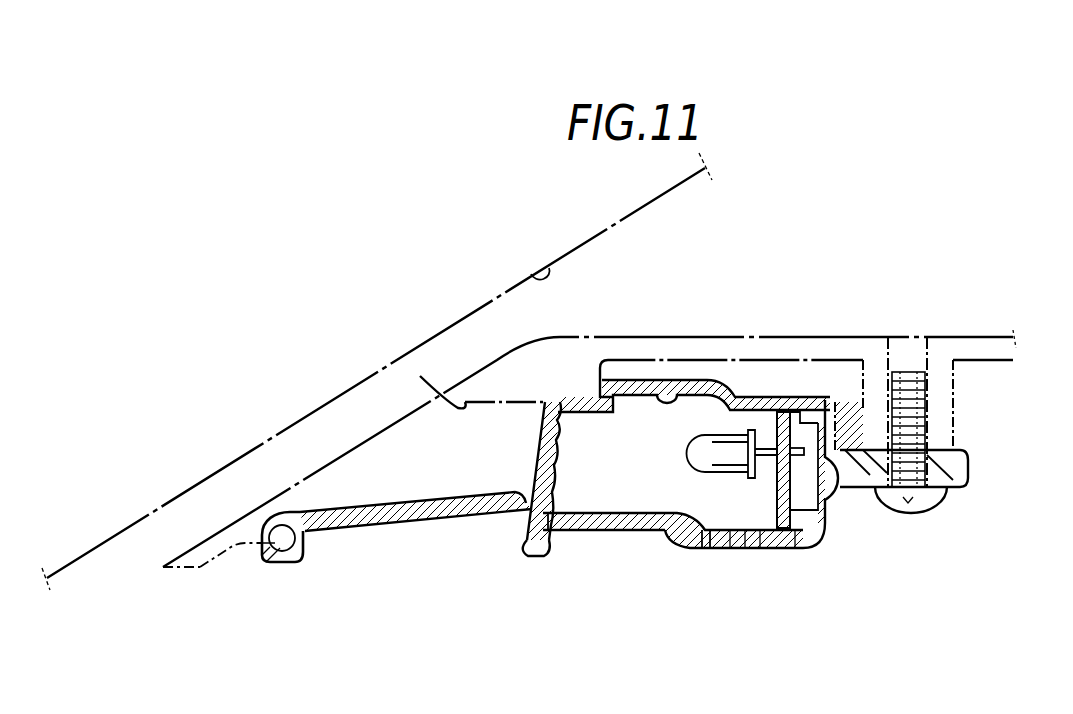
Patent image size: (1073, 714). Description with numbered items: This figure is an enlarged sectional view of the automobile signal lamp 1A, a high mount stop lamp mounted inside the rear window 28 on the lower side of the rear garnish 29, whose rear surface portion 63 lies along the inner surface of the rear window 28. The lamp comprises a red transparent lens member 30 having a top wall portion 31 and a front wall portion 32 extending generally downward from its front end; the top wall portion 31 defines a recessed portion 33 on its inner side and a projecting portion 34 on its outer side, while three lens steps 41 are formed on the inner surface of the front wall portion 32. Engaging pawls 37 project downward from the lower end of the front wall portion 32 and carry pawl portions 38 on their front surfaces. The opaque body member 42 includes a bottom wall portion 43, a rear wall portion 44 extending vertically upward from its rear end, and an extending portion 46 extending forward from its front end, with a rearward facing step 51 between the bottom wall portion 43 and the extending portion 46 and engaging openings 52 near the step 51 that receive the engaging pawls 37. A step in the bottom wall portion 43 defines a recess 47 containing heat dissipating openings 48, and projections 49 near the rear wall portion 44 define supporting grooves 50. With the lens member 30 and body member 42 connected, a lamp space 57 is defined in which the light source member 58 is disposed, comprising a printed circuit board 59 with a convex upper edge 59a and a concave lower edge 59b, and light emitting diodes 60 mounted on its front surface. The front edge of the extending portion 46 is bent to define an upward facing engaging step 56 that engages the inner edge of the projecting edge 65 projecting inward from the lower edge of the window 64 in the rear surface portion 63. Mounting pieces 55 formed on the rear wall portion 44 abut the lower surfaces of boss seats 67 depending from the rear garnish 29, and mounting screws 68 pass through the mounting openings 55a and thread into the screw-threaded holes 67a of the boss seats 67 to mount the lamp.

The automobile signal lamp 1A is at (402, 264).
The rear window 28 is at (546, 265).
The rear garnish 29 is at (820, 337).
The lens member 30 is at (530, 448).
The top wall portion 31 is at (735, 395).
The front wall portion 32 is at (542, 427).
The recessed portion 33 is at (679, 380).
The projecting portion 34 is at (637, 380).
The engaging pawl 37 is at (542, 557).
The pawl portion 38 is at (513, 543).
The lens step 41 is at (560, 430).
The body member 42 is at (812, 540).
The bottom wall portion 43 is at (616, 531).
The rear wall portion 44 is at (858, 358).
The extending portion 46 is at (386, 533).
The recess 47 is at (708, 548).
The heat dissipating opening 48 is at (737, 550).
The projection 49 is at (773, 510).
The supporting groove 50 is at (797, 548).
The rearward facing step 51 is at (530, 481).
The engaging opening 52 is at (546, 556).
The mounting piece 55 is at (968, 468).
The mounting opening 55a is at (917, 490).
The engaging step 56 is at (278, 563).
The lamp space 57 is at (591, 491).
The light source member 58 is at (833, 264).
The printed circuit board 59 is at (786, 412).
The upper edge 59a is at (793, 448).
The lower edge 59b is at (776, 550).
The light emitting diode 60 is at (737, 432).
The rear surface portion 63 is at (333, 455).
The window 64 is at (420, 376).
The projecting edge 65 is at (262, 507).
The boss seat 67 is at (953, 412).
The screw-threaded hole 67a is at (902, 360).
The mounting screw 68 is at (945, 495).